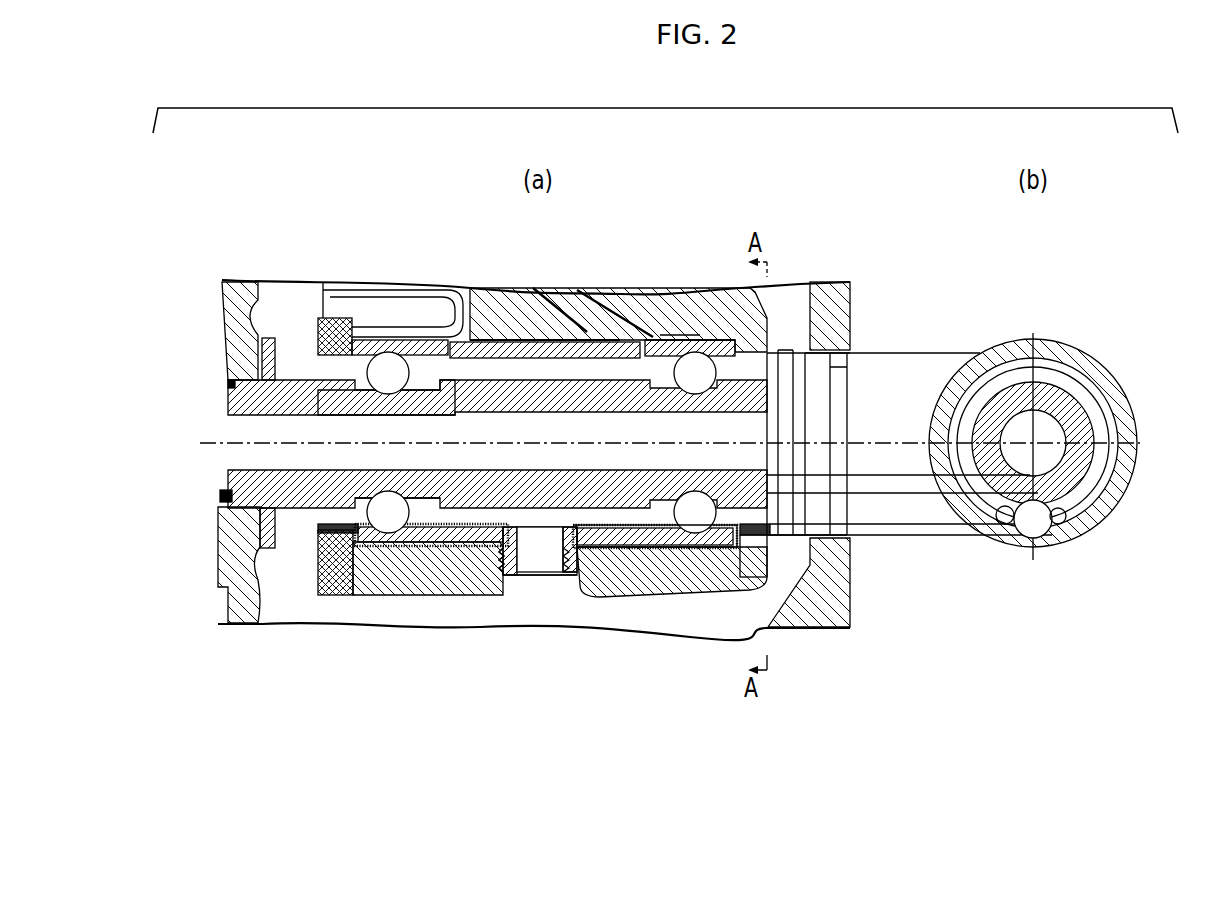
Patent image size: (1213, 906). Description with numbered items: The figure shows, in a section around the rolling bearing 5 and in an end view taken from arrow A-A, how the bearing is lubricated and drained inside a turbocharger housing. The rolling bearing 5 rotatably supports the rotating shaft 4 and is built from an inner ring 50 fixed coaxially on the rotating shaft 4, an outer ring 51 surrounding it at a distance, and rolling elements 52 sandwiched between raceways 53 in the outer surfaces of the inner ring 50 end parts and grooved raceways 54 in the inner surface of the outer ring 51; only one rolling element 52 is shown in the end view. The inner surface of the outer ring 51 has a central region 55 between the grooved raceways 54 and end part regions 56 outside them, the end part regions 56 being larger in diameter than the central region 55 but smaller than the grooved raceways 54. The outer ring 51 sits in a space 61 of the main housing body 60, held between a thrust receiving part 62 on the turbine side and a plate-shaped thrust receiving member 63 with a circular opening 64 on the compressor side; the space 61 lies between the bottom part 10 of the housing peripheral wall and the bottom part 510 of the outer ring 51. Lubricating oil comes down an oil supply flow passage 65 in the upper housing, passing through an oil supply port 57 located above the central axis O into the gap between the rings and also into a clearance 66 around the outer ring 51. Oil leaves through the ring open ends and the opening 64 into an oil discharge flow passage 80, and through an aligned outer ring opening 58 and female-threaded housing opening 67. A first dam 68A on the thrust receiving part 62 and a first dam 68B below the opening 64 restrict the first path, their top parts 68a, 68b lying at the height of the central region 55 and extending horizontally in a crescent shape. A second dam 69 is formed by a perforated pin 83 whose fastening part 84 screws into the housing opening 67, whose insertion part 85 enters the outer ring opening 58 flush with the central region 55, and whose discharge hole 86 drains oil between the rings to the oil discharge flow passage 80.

The central axis O is at (213, 426).
The rotating shaft 4 is at (245, 455).
The rolling bearing 5 is at (776, 350).
The bottom part of the peripheral wall of the housing 10 is at (730, 605).
The inner ring 50 is at (513, 357).
The outer ring 51 is at (440, 545).
The rolling elements 52 is at (370, 356).
The raceways 53 is at (387, 492).
The grooved raceways 54 is at (400, 357).
The central region 55 is at (452, 500).
The end part regions 56 is at (370, 495).
The oil supply port 57 is at (438, 360).
The outer ring opening 58 is at (568, 543).
The main housing body 60 is at (622, 560).
The space 61 is at (613, 553).
The thrust receiving part 62 is at (760, 558).
The thrust receiving member 63 is at (333, 597).
The opening 64 is at (318, 352).
The oil supply flow passage 65 is at (485, 340).
The clearance 66 is at (466, 597).
The housing opening 67 is at (505, 580).
The top part of the first dam 68A 68a is at (770, 524).
The top part of the first dam 68B 68b is at (318, 514).
The first dam 68A is at (810, 563).
The first dam 68B is at (318, 515).
The second dam 69 is at (553, 358).
The oil discharge flow passage 80 is at (552, 582).
The perforated pin 83 is at (522, 578).
The fastening part 84 is at (569, 575).
The insertion part 85 is at (515, 520).
The discharge hole 86 is at (553, 566).
The bottom part of the outer ring 510 is at (646, 583).